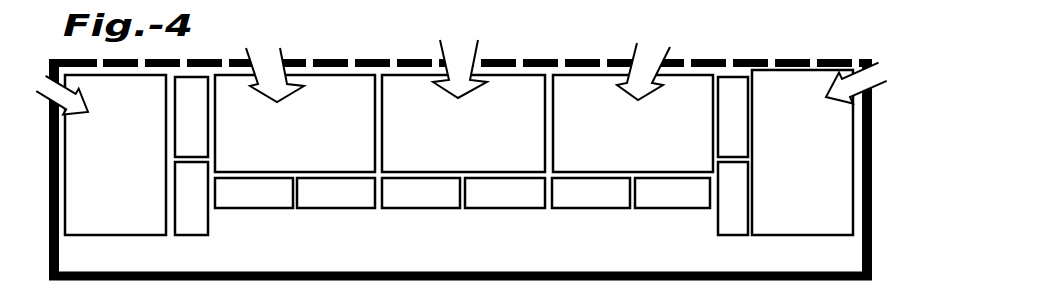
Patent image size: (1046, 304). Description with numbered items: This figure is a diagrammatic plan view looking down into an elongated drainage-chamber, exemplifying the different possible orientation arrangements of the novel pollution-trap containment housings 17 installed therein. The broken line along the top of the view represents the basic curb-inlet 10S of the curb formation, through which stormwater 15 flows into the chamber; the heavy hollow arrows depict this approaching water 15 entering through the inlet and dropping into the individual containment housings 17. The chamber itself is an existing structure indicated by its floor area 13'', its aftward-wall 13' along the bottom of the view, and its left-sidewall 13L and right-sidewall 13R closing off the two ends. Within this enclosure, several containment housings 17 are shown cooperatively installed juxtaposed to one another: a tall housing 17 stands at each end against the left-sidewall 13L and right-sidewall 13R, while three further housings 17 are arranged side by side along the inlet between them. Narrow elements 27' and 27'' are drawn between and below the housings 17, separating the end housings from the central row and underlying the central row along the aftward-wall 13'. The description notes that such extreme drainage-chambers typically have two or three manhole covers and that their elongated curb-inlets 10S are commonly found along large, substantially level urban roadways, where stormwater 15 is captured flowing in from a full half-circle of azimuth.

The curb inlet 10S is at (513, 57).
The left sidewall 13L is at (58, 251).
The right sidewall 13R is at (860, 247).
The aftward wall 13' is at (254, 254).
The floor 13'' is at (666, 254).
The approaching water 15 is at (861, 5).
The pollution-trap containment housing 17 is at (122, 168).
The left divider panel and trays 27' is at (317, 169).
The right divider panel and trays 27'' is at (606, 167).